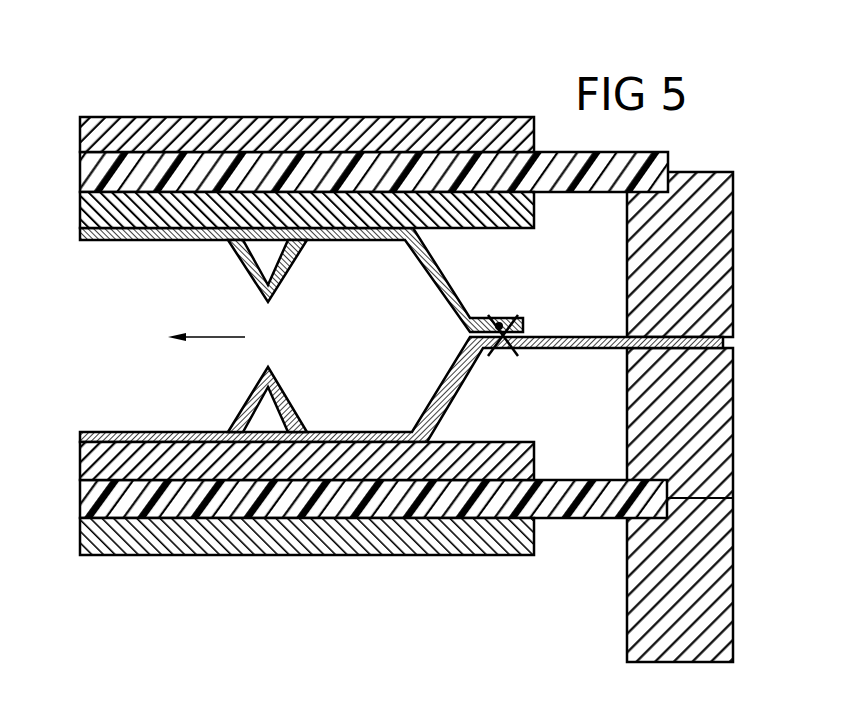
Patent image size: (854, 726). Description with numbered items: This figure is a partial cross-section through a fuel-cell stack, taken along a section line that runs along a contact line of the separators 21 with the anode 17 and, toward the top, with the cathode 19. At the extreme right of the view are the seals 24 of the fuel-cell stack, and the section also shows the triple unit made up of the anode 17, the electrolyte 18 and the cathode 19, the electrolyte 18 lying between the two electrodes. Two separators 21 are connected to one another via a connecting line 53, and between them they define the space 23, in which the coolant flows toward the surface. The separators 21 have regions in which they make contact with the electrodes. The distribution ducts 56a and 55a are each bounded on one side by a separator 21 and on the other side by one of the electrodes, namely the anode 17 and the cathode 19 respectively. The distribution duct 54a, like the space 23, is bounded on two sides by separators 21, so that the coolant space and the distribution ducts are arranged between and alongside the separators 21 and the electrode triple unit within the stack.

The anode 17 is at (110, 143).
The electrolyte 18 is at (110, 178).
The cathode 19 is at (105, 207).
The separator 21 is at (458, 384).
The space 23 is at (157, 316).
The seal 24 is at (725, 226).
The connecting line 53 is at (499, 318).
The distribution duct 54a is at (387, 352).
The distribution duct 55a is at (590, 290).
The distribution duct 56a is at (595, 423).